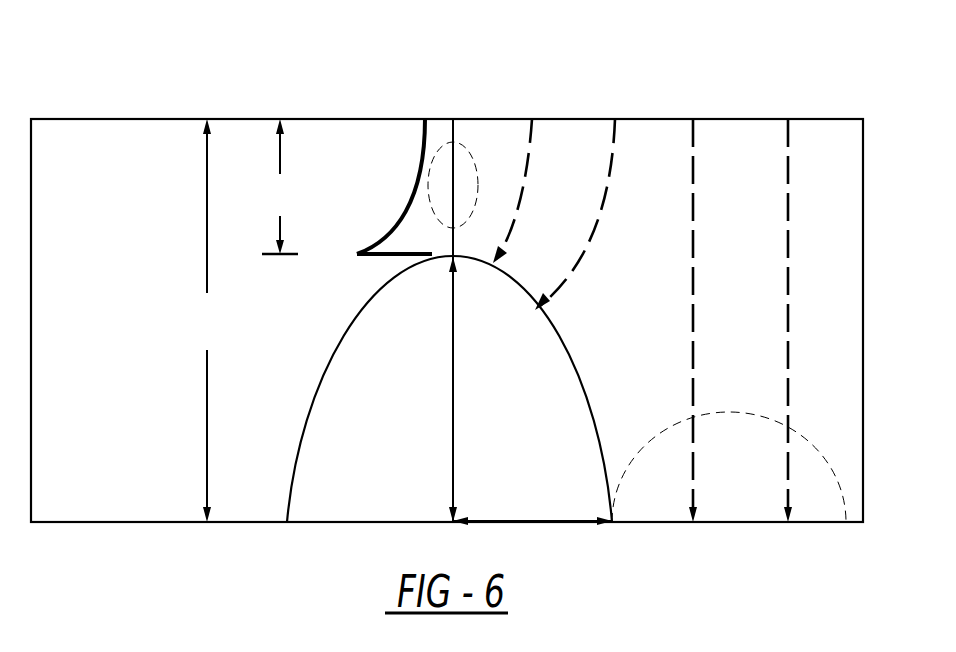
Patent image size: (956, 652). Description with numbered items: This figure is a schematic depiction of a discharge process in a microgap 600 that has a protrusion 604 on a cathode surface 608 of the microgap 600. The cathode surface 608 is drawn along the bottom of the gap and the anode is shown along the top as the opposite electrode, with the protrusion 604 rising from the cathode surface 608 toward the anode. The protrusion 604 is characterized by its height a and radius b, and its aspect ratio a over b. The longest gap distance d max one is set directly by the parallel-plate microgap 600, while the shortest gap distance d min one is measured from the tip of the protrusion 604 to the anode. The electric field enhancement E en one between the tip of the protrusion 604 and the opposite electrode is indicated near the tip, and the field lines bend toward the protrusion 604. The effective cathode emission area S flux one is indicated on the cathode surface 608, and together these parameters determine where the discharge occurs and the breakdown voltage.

The microgap 600 is at (160, 74).
The protrusion 604 is at (347, 338).
The cathode surface 608 is at (143, 522).